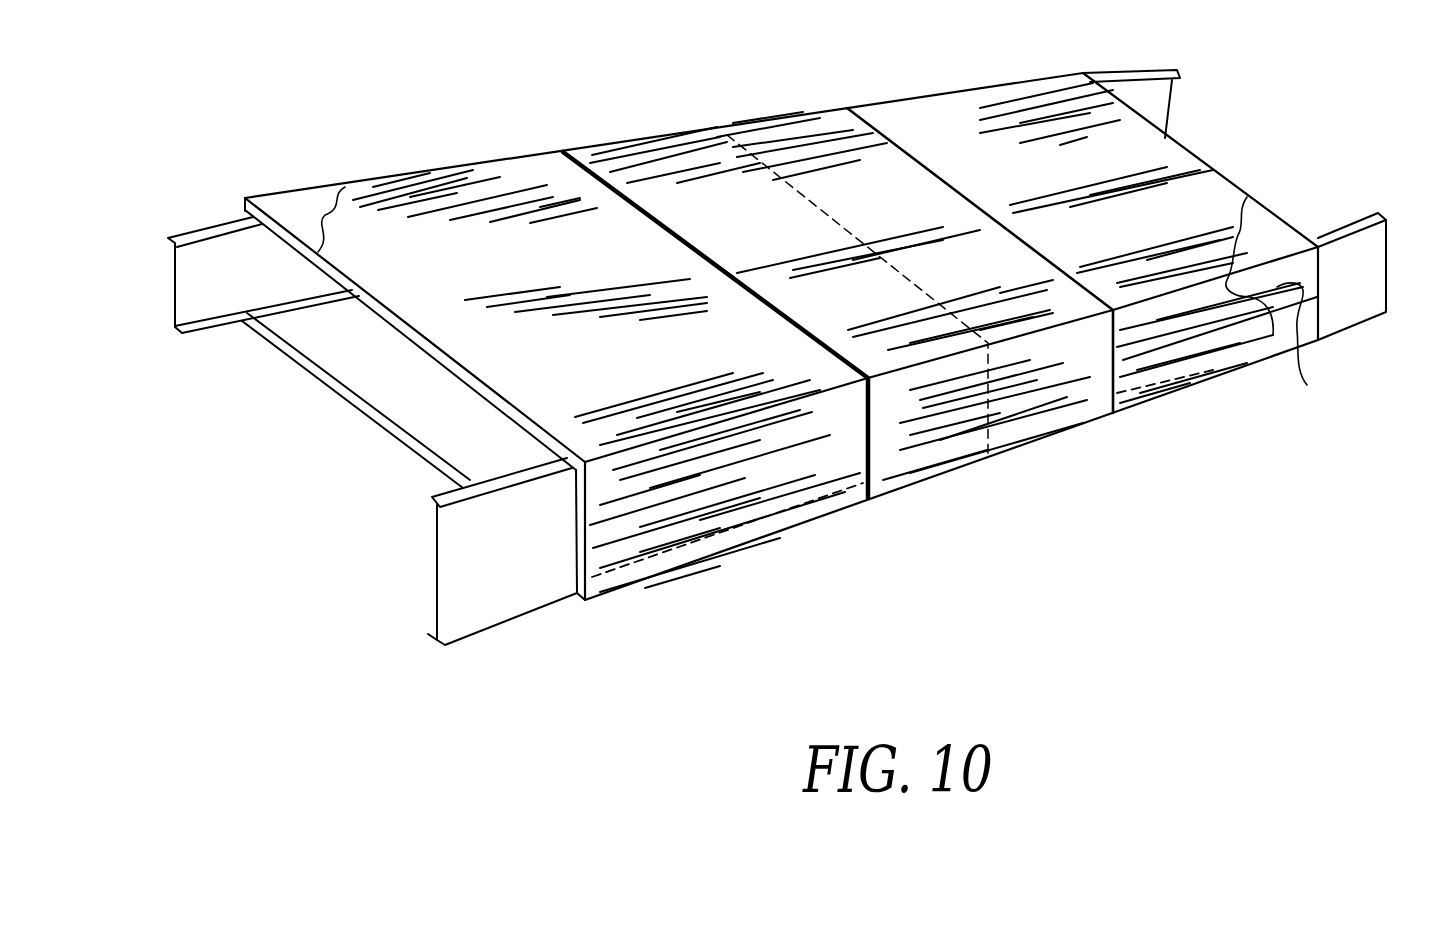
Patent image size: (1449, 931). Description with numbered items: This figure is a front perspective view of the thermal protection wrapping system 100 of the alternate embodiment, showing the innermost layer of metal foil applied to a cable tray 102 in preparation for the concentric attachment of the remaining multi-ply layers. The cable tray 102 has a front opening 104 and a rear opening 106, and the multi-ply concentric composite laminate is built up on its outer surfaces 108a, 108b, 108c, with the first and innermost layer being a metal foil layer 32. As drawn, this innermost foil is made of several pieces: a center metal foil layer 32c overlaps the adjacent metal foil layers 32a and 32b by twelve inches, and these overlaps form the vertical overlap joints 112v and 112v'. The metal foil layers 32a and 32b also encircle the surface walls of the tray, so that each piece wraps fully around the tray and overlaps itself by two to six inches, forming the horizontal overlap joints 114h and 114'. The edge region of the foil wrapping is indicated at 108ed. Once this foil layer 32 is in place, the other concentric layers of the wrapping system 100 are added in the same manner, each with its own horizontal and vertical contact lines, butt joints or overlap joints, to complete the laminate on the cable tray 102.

The thermal protection wrapping system 100 is at (405, 38).
The metal foil layer 32 is at (641, 373).
The metal foil layer 32a is at (586, 271).
The metal foil layer 32b is at (972, 87).
The center metal foil layer 32c is at (662, 160).
The vertical overlap joint 112v is at (758, 358).
The vertical overlap joint 112v' is at (1012, 284).
The horizontal overlap joint 114h is at (747, 477).
The horizontal overlap joint 114' is at (1202, 389).
The outer surface 108a is at (302, 210).
The outer surface 108b is at (1322, 347).
The outer surface 108c is at (378, 363).
The facing sheet edge 108ed is at (243, 219).
The cable tray 102 is at (805, 457).
The front opening 104 is at (360, 451).
The rear opening 106 is at (1200, 104).